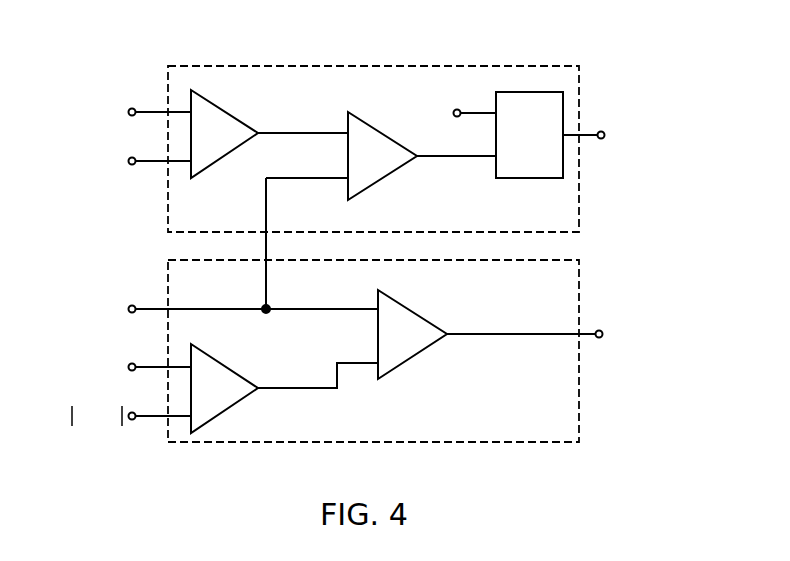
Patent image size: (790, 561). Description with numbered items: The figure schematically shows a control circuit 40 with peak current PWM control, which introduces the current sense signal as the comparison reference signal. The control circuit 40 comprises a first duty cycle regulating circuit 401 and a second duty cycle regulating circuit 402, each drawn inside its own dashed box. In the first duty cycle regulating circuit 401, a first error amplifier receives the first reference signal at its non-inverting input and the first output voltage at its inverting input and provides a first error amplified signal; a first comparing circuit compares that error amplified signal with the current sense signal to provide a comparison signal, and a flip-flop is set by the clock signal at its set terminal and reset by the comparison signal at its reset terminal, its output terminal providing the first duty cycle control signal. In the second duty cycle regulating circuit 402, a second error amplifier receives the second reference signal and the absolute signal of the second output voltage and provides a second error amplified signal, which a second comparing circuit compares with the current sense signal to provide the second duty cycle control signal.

The control circuit 40 is at (378, 35).
The first duty cycle regulating circuit 401 is at (560, 220).
The second duty cycle regulating circuit 402 is at (560, 430).